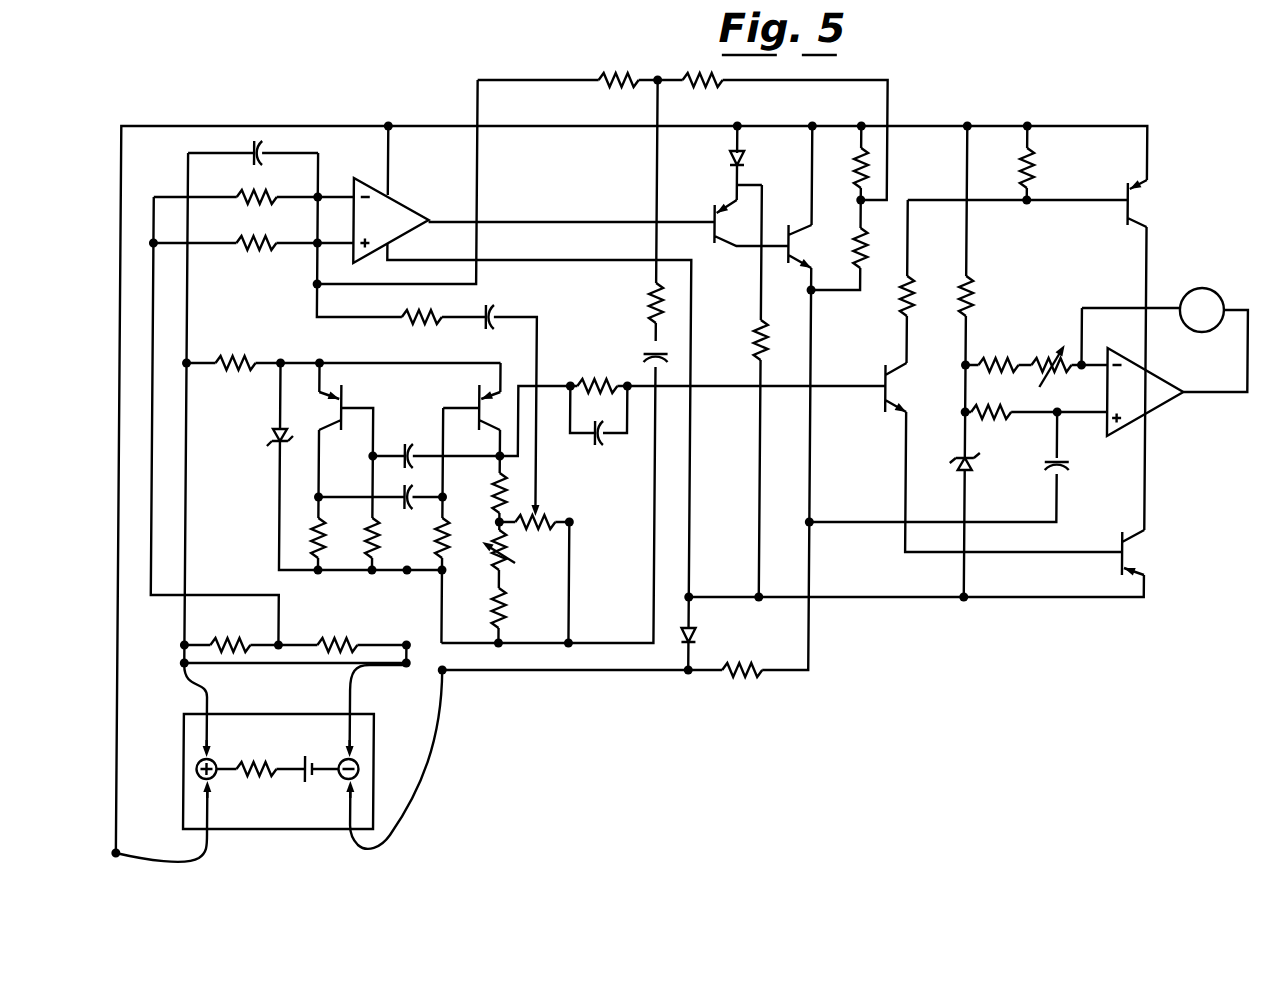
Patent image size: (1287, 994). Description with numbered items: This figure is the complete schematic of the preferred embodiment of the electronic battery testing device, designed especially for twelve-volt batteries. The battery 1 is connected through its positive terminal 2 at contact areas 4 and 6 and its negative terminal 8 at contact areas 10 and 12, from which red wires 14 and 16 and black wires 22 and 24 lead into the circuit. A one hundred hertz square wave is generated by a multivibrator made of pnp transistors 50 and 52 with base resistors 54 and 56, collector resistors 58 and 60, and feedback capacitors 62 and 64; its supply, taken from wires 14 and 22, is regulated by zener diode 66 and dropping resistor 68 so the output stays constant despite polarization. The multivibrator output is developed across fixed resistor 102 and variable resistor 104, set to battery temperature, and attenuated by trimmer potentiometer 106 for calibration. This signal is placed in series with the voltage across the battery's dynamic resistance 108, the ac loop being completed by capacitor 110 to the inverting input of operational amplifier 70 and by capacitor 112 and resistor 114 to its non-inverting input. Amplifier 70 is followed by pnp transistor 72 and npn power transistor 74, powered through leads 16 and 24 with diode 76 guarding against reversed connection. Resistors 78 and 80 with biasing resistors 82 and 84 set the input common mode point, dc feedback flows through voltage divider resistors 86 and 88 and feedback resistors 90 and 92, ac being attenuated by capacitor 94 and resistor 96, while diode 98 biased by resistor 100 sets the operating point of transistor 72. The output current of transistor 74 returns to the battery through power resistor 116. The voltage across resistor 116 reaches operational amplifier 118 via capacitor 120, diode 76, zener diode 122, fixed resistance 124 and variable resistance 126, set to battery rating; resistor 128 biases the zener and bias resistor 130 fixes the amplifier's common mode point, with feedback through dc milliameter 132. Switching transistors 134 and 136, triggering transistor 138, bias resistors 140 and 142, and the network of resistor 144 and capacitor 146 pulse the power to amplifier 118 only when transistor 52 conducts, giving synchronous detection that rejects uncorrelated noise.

The battery 1 is at (314, 833).
The positive terminal 2 is at (201, 773).
The contact area 4 is at (202, 753).
The contact area 6 is at (200, 788).
The negative terminal 8 is at (366, 767).
The contact area 10 is at (358, 750).
The contact area 12 is at (360, 793).
The red wire 14 is at (213, 698).
The red wire 16 is at (209, 863).
The black wire 22 is at (360, 680).
The black wire 24 is at (434, 776).
The pnp transistor 50 is at (347, 396).
The pnp transistor 52 is at (488, 393).
The base resistor 54 is at (371, 530).
The base resistor 56 is at (446, 524).
The collector resistor 58 is at (318, 530).
The collector resistor 60 is at (499, 483).
The feedback capacitor 62 is at (391, 452).
The feedback capacitor 64 is at (403, 507).
The zener diode 66 is at (272, 433).
The dropping resistor 68 is at (236, 358).
The operational amplifier 70 is at (372, 184).
The pnp transistor 72 is at (711, 230).
The npn power transistor 74 is at (780, 232).
The diode 76 is at (700, 638).
The voltage-divider resistor 78 is at (220, 638).
The voltage-divider resistor 80 is at (344, 638).
The biasing resistor 82 is at (249, 192).
The biasing resistor 84 is at (250, 252).
The voltage divider resistor 86 is at (857, 252).
The voltage divider resistor 88 is at (857, 168).
The feedback resistor 90 is at (700, 86).
The feedback resistor 92 is at (618, 73).
The capacitor 94 is at (650, 350).
The resistor 96 is at (648, 300).
The diode 98 is at (729, 160).
The resistor 100 is at (755, 334).
The fixed resistor 102 is at (513, 603).
The variable resistor 104 is at (498, 565).
The trimmer potentiometer 106 is at (548, 510).
The dynamic resistance 108 is at (262, 762).
The capacitor 110 is at (250, 150).
The capacitor 112 is at (498, 306).
The resistor 114 is at (412, 324).
The power resistor 116 is at (752, 680).
The operational amplifier 118 is at (1130, 346).
The capacitor 120 is at (1077, 468).
The zener diode 122 is at (962, 452).
The fixed resistance 124 is at (985, 360).
The variable resistance 126 is at (1060, 338).
The resistor 128 is at (980, 290).
The bias resistor 130 is at (990, 414).
The dc milliameter 132 is at (1218, 292).
The switching transistor 134 is at (1142, 207).
The switching transistor 136 is at (1140, 570).
The triggering transistor 138 is at (882, 404).
The bias resistor 140 is at (900, 304).
The bias resistor 142 is at (1042, 166).
The resistor 144 is at (608, 380).
The capacitor 146 is at (593, 447).